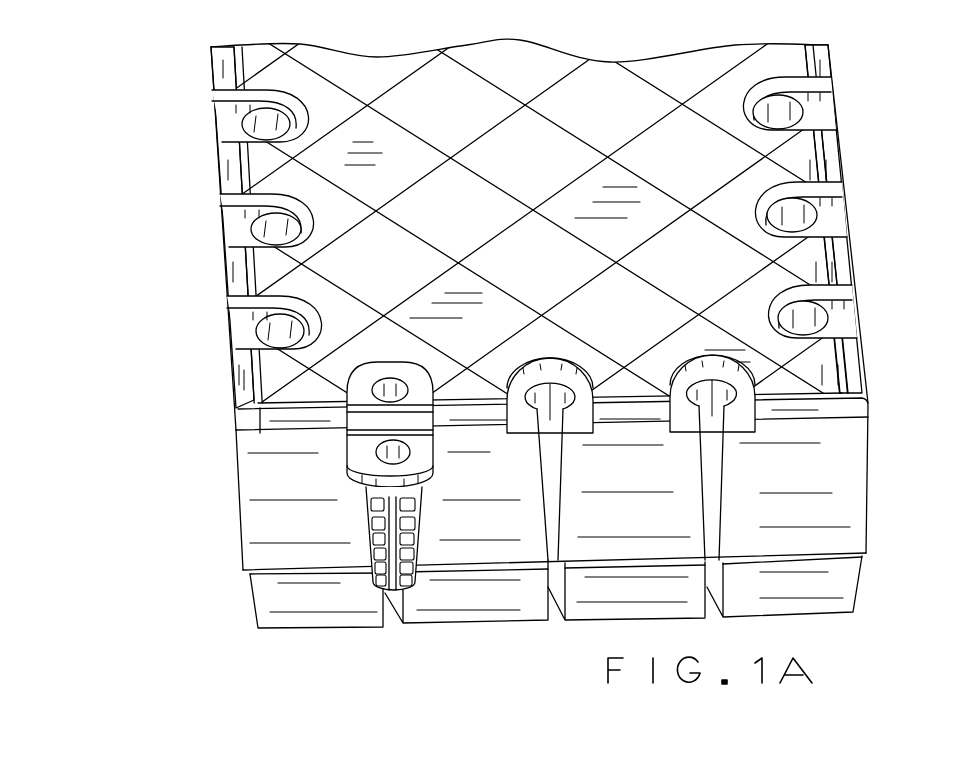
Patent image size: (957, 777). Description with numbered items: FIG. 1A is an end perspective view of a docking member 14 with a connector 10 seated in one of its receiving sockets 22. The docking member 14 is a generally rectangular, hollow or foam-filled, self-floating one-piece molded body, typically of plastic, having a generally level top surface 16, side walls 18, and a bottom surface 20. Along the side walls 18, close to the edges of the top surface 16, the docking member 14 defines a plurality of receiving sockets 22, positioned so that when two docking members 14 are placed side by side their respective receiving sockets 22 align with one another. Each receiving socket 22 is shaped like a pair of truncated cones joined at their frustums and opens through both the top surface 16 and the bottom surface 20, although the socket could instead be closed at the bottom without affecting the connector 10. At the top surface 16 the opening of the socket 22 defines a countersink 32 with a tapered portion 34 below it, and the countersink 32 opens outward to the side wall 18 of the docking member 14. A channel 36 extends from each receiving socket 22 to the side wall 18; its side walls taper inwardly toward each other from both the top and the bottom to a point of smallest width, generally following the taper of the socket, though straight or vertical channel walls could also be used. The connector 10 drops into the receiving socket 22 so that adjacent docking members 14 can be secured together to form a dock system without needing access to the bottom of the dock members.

The connector 10 is at (367, 490).
The docking member 14 is at (243, 383).
The top surface 16 is at (247, 230).
The side wall 18 is at (721, 502).
The bottom surface 20 is at (798, 617).
The receiving socket 22 is at (722, 395).
The countersink 32 is at (755, 395).
The tapered portion 34 is at (565, 387).
The channel 36 is at (552, 510).